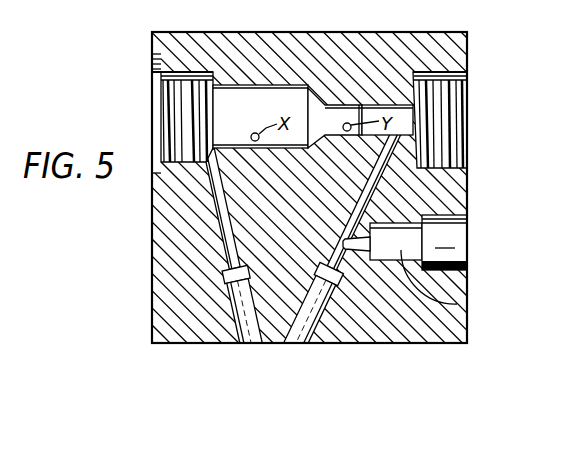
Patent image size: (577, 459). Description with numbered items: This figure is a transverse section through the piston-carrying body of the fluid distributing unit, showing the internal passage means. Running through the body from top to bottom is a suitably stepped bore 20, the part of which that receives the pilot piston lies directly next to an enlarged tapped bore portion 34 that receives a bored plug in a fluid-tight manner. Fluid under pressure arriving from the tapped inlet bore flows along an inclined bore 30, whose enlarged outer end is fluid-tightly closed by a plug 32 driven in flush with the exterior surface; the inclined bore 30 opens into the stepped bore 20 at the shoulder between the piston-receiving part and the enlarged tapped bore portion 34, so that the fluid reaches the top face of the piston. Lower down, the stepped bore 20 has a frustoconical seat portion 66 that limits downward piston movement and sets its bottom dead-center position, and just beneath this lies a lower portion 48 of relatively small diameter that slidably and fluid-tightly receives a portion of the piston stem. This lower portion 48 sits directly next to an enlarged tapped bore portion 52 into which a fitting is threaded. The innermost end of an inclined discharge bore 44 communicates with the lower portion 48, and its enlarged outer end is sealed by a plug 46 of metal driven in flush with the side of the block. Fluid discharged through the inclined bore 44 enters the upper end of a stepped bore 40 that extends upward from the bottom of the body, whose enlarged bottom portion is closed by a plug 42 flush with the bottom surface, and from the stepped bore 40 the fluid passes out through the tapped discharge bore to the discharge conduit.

The stepped bore 20 is at (226, 86).
The inclined bore 30 is at (224, 252).
The plug 32 is at (252, 343).
The enlarged tapped bore portion 34 is at (187, 72).
The stepped bore 40 is at (458, 304).
The plug 42 is at (465, 252).
The inclined bore 44 is at (376, 186).
The plug 46 is at (309, 343).
The lower portion of the bore 48 is at (383, 104).
The enlarged tapped bore portion 52 is at (445, 78).
The frustoconical seat portion 66 is at (323, 102).